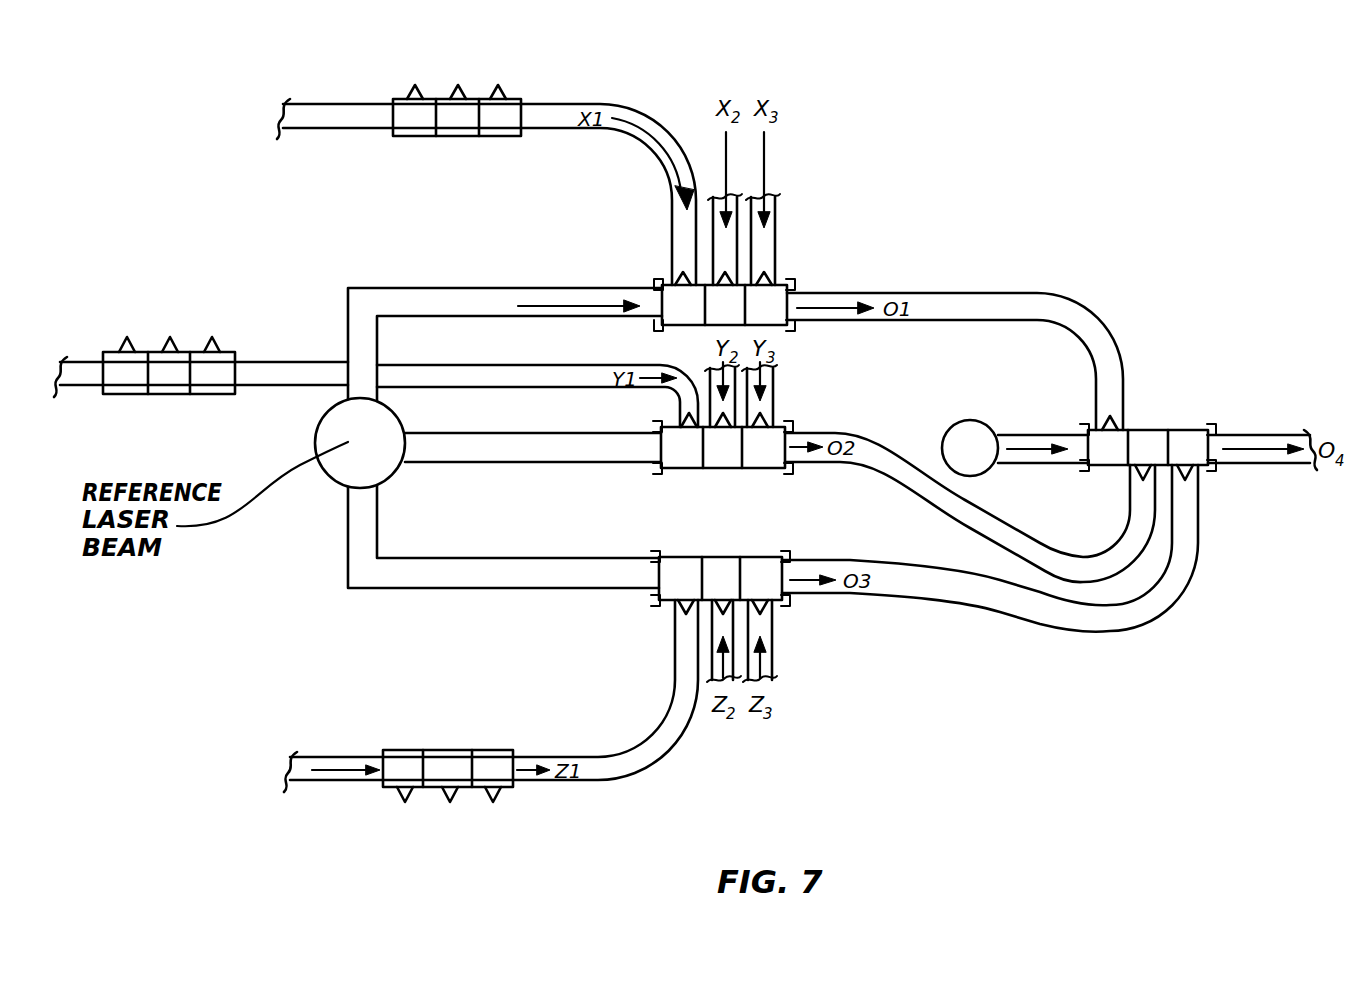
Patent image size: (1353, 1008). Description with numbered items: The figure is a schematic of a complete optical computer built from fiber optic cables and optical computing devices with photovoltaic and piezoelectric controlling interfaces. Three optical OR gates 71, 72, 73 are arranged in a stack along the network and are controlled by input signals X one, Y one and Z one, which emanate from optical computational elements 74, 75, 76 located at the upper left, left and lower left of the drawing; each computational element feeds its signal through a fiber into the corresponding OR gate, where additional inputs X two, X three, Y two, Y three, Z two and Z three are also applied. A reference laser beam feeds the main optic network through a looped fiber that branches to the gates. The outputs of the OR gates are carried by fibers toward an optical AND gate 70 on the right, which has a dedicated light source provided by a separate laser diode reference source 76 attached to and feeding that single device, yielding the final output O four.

The optical AND gate 70 is at (1143, 443).
The optical OR gate 71 is at (675, 303).
The optical OR gate 72 is at (725, 448).
The optical OR gate 73 is at (720, 575).
The optical computational element 74 is at (457, 115).
The optical computational element 75 is at (170, 368).
The optical computational element / laser diode reference source 76 is at (958, 443).